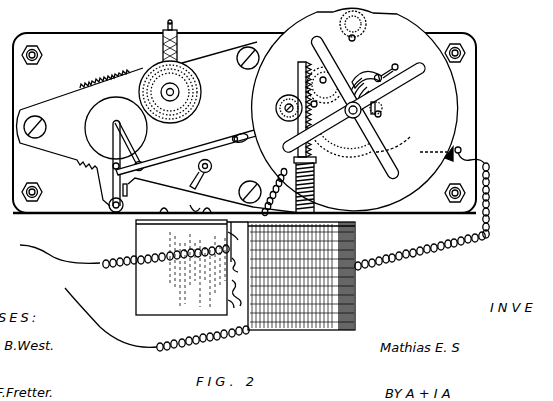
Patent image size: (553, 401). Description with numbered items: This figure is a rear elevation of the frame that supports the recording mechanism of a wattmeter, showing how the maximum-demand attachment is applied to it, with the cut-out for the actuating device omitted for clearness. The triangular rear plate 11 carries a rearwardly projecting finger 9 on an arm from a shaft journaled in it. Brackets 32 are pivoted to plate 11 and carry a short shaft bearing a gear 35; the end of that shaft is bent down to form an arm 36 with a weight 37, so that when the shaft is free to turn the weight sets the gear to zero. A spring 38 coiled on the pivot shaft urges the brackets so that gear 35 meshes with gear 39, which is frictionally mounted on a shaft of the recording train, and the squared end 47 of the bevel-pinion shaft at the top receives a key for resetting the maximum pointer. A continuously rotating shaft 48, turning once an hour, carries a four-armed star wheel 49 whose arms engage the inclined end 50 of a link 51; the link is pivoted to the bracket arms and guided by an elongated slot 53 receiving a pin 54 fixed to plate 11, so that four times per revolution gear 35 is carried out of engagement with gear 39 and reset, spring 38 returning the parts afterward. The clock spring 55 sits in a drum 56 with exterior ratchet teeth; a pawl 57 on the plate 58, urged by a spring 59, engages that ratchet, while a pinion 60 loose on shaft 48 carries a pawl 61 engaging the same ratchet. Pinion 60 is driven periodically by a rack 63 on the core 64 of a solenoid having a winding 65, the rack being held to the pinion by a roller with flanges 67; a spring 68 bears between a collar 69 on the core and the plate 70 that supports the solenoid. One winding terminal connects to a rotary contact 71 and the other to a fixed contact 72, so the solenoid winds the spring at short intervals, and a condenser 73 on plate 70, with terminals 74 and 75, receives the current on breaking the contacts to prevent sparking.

The rearwardly projecting finger 9 is at (205, 180).
The plate 11 is at (186, 131).
The bracket 32 is at (115, 144).
The gear 35 is at (116, 128).
The arm 36 is at (121, 129).
The weight 37 is at (142, 168).
The spring 38 is at (113, 190).
The gear 39 is at (203, 84).
The squared end of pinion shaft 47 is at (175, 23).
The continuously rotating shaft 48 is at (383, 101).
The star wheel 49 is at (328, 63).
The inclined end 50 is at (262, 103).
The link 51 is at (200, 146).
The elongated slot 53 is at (246, 131).
The pin 54 is at (236, 142).
The spring 55 is at (382, 114).
The drum 56 is at (371, 108).
The pawl 57 is at (361, 73).
The plate 58 is at (404, 27).
The spring 59 is at (394, 65).
The pinion 60 is at (344, 143).
The pawl 61 is at (323, 78).
The rack 63 is at (300, 62).
The core 64 is at (316, 167).
The winding 65 is at (356, 296).
The flanges 67 is at (291, 97).
The spring 68 is at (316, 196).
The collar 69 is at (294, 160).
The plate 70 is at (185, 204).
The rotary contact 71 is at (410, 138).
The fixed contact 72 is at (435, 152).
The condenser 73 is at (145, 293).
The terminal 74 is at (157, 315).
The terminal 75 is at (225, 232).